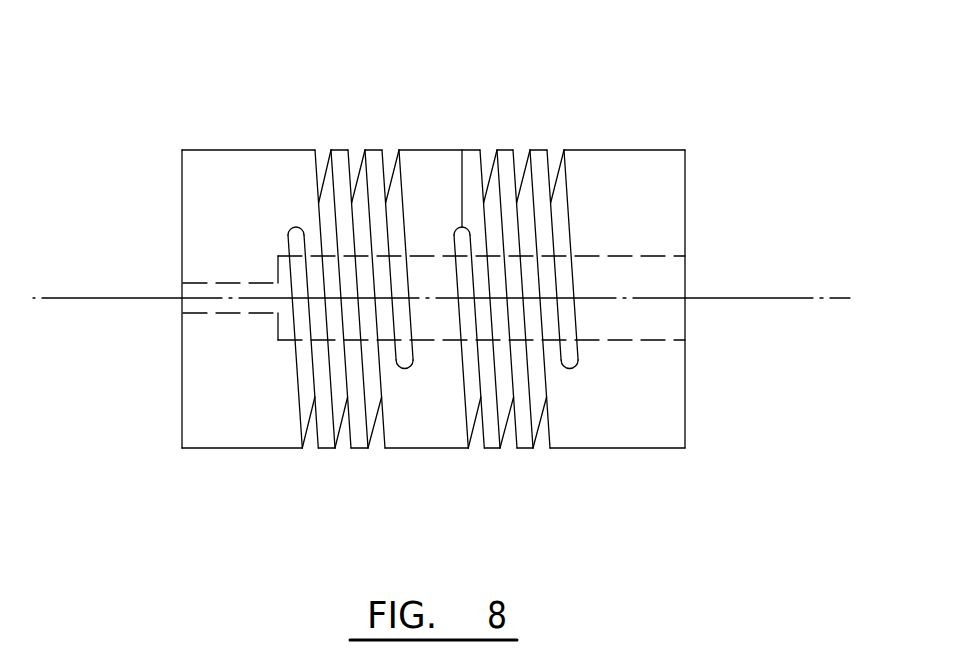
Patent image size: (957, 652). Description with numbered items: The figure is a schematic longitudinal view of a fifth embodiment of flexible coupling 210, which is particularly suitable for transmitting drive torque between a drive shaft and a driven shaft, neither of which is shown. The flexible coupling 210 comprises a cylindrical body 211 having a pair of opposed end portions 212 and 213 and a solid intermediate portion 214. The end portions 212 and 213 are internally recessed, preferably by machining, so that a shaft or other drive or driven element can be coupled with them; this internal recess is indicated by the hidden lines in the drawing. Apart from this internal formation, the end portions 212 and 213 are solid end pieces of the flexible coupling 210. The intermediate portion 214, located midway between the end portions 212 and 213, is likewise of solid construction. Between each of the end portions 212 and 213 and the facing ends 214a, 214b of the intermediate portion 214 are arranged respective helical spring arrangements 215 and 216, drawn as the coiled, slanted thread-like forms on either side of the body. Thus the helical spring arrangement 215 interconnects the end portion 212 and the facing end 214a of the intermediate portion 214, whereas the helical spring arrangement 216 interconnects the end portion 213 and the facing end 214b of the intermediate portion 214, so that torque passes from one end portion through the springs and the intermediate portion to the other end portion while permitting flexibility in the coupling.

The flexible coupling 210 is at (657, 130).
The cylindrical body 211 is at (493, 453).
The end portion 212 is at (218, 183).
The end portion 213 is at (643, 392).
The intermediate portion 214 is at (436, 175).
The facing end of intermediate portion 214a is at (399, 149).
The facing end of intermediate portion 214b is at (463, 183).
The helical spring arrangement 215 is at (325, 438).
The helical spring arrangement 216 is at (527, 443).